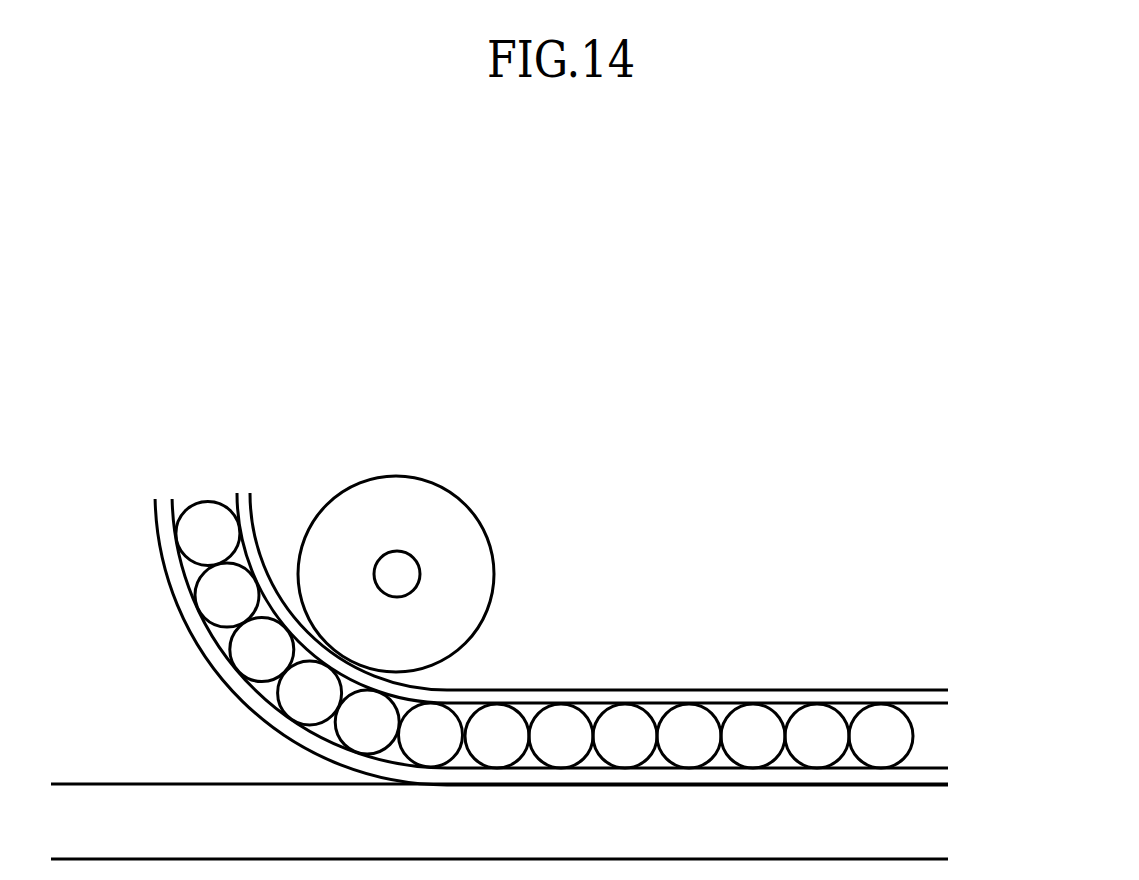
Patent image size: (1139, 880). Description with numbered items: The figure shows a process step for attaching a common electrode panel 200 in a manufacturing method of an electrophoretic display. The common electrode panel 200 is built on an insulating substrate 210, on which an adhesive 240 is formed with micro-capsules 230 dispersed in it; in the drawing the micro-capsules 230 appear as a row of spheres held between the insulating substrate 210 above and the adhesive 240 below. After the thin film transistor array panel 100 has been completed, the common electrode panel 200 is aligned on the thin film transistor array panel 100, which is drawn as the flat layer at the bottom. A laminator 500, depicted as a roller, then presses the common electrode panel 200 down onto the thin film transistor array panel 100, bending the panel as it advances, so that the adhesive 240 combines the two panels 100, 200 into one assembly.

The thin film transistor array panel 100 is at (958, 830).
The common electrode panel 200 is at (593, 639).
The insulating substrate 210 is at (850, 698).
The micro-capsules 230 is at (752, 727).
The adhesive 240 is at (172, 593).
The laminator 500 is at (481, 504).